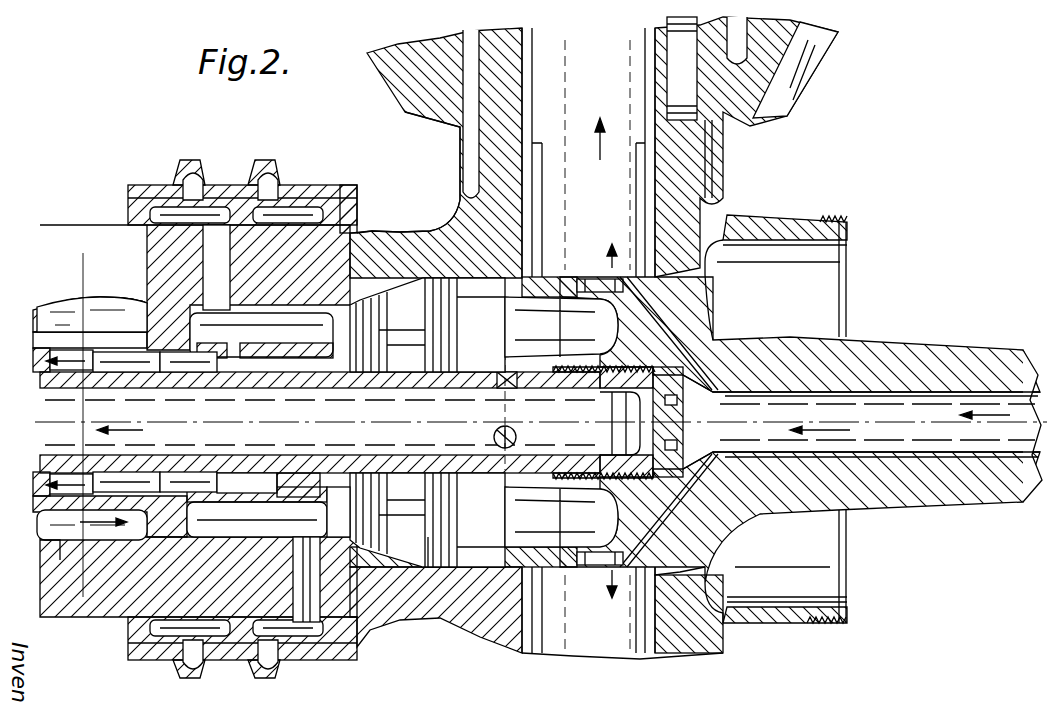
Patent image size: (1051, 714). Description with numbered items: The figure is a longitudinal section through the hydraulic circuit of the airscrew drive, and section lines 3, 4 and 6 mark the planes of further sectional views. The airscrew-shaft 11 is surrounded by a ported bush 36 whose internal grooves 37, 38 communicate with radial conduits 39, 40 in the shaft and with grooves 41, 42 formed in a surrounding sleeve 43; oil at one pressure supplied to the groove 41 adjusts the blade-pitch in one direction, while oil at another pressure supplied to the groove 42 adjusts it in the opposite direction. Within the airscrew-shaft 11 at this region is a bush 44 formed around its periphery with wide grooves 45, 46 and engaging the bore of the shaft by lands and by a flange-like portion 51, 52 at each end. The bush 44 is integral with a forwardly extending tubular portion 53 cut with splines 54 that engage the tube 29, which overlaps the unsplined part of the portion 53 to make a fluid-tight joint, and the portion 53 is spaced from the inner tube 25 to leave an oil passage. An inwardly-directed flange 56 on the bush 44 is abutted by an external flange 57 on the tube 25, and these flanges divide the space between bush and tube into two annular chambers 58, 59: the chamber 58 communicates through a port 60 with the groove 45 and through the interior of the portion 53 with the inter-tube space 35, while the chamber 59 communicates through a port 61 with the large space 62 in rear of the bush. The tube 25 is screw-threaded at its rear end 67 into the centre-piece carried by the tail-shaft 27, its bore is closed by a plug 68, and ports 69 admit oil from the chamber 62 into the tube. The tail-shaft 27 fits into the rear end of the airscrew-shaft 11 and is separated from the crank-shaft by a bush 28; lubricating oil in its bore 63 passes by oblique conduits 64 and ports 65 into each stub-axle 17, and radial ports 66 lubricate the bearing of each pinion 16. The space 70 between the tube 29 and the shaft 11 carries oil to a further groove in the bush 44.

The section line 3 is at (592, 247).
The section line 4 is at (94, 263).
The section line 6 is at (218, 268).
The airscrew-shaft 11 is at (62, 225).
The pinion 16 is at (800, 78).
The stub-axle 17 is at (513, 190).
The tube 25 is at (347, 422).
The tail-shaft 27 is at (868, 488).
The bush 28 is at (560, 305).
The tube 29 is at (50, 500).
The inter-tube space 35 is at (42, 472).
The ported bush 36 is at (140, 196).
The internal groove 37 is at (175, 218).
The internal groove 38 is at (292, 218).
The radial conduit 39 is at (205, 262).
The radial conduit 40 is at (370, 592).
The groove 41 is at (192, 180).
The groove 42 is at (262, 180).
The sleeve 43 is at (348, 190).
The bush 44 is at (60, 555).
The groove 45 is at (373, 240).
The groove 46 is at (347, 497).
The flange-like portion 51 is at (128, 620).
The flange-like portion 52 is at (362, 512).
The tubular portion 53 is at (52, 541).
The splines 54 is at (45, 522).
The inwardly-directed flange 56 is at (293, 497).
The external flange 57 is at (243, 473).
The annular chamber 58 is at (168, 372).
The annular chamber 59 is at (352, 335).
The port 60 is at (212, 362).
The port 61 is at (300, 497).
The large space 62 is at (430, 540).
The bore 63 is at (873, 410).
The oblique conduit 64 is at (720, 335).
The port 65 is at (522, 600).
The radial port 66 is at (668, 110).
The rear end 67 is at (552, 490).
The plug 68 is at (678, 432).
The ports 69 is at (507, 428).
The space 70 is at (42, 318).